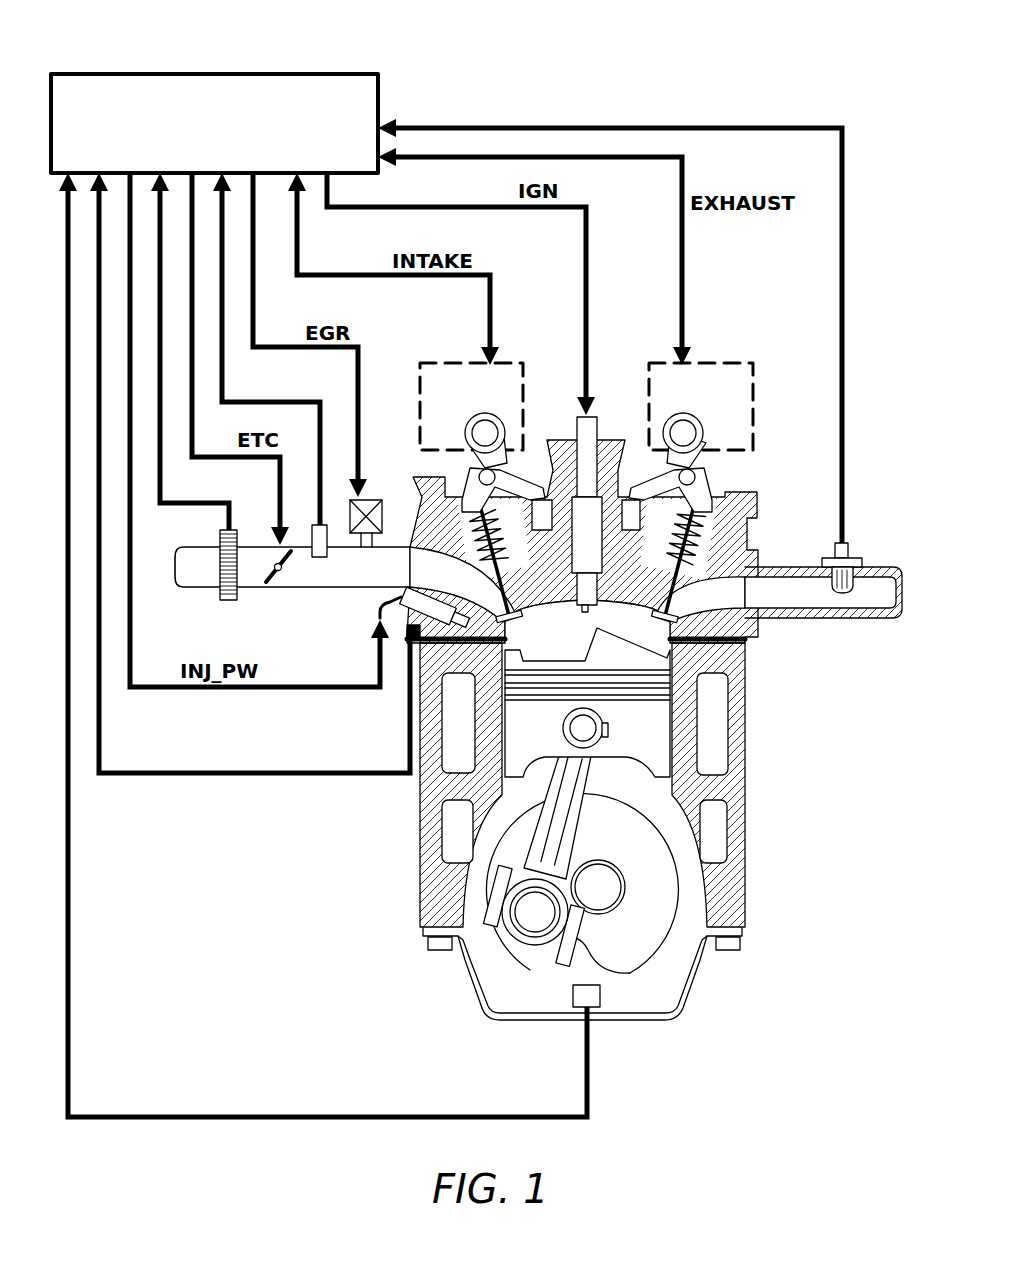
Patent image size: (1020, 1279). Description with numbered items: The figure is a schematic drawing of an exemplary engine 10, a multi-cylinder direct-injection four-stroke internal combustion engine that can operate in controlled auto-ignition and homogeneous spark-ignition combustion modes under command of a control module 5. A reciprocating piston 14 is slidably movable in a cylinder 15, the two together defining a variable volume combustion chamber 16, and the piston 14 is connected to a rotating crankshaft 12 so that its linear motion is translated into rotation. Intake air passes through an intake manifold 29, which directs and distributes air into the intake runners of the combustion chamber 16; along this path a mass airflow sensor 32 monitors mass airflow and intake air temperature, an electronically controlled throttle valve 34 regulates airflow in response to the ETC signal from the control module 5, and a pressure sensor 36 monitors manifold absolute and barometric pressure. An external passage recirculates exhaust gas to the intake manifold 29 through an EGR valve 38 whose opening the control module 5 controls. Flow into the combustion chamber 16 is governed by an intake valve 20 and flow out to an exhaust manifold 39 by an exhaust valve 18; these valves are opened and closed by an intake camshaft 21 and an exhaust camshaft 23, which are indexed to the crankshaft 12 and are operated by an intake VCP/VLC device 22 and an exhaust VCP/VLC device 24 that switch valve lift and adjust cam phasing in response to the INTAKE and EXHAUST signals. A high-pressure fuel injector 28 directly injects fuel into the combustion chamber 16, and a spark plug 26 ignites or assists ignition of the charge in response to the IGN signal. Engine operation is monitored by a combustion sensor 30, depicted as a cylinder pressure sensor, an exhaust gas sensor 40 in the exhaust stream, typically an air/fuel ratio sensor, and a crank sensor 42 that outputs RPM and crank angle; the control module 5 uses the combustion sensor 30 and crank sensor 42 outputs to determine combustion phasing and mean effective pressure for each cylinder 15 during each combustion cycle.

The control module 5 is at (333, 74).
The engine 10 is at (747, 786).
The crankshaft 12 is at (643, 947).
The piston 14 is at (648, 741).
The cylinder 15 is at (675, 659).
The combustion chamber 16 is at (562, 652).
The exhaust valve 18 is at (660, 607).
The intake valve 20 is at (500, 603).
The intake camshaft 21 is at (490, 440).
The intake variable cam phasing/variable lift control device 22 is at (515, 367).
The exhaust camshaft 23 is at (683, 433).
The exhaust variable cam phasing/variable lift control device 24 is at (740, 427).
The spark plug 26 is at (592, 418).
The fuel injector 28 is at (378, 612).
The intake manifold 29 is at (395, 552).
The combustion sensor 30 is at (407, 636).
The mass airflow sensor 32 is at (222, 603).
The throttle valve 34 is at (273, 583).
The pressure sensor 36 is at (320, 558).
The exhaust gas recirculation valve 38 is at (358, 533).
The exhaust manifold 39 is at (787, 565).
The exhaust gas sensor 40 is at (850, 557).
The crank sensor 42 is at (578, 1002).